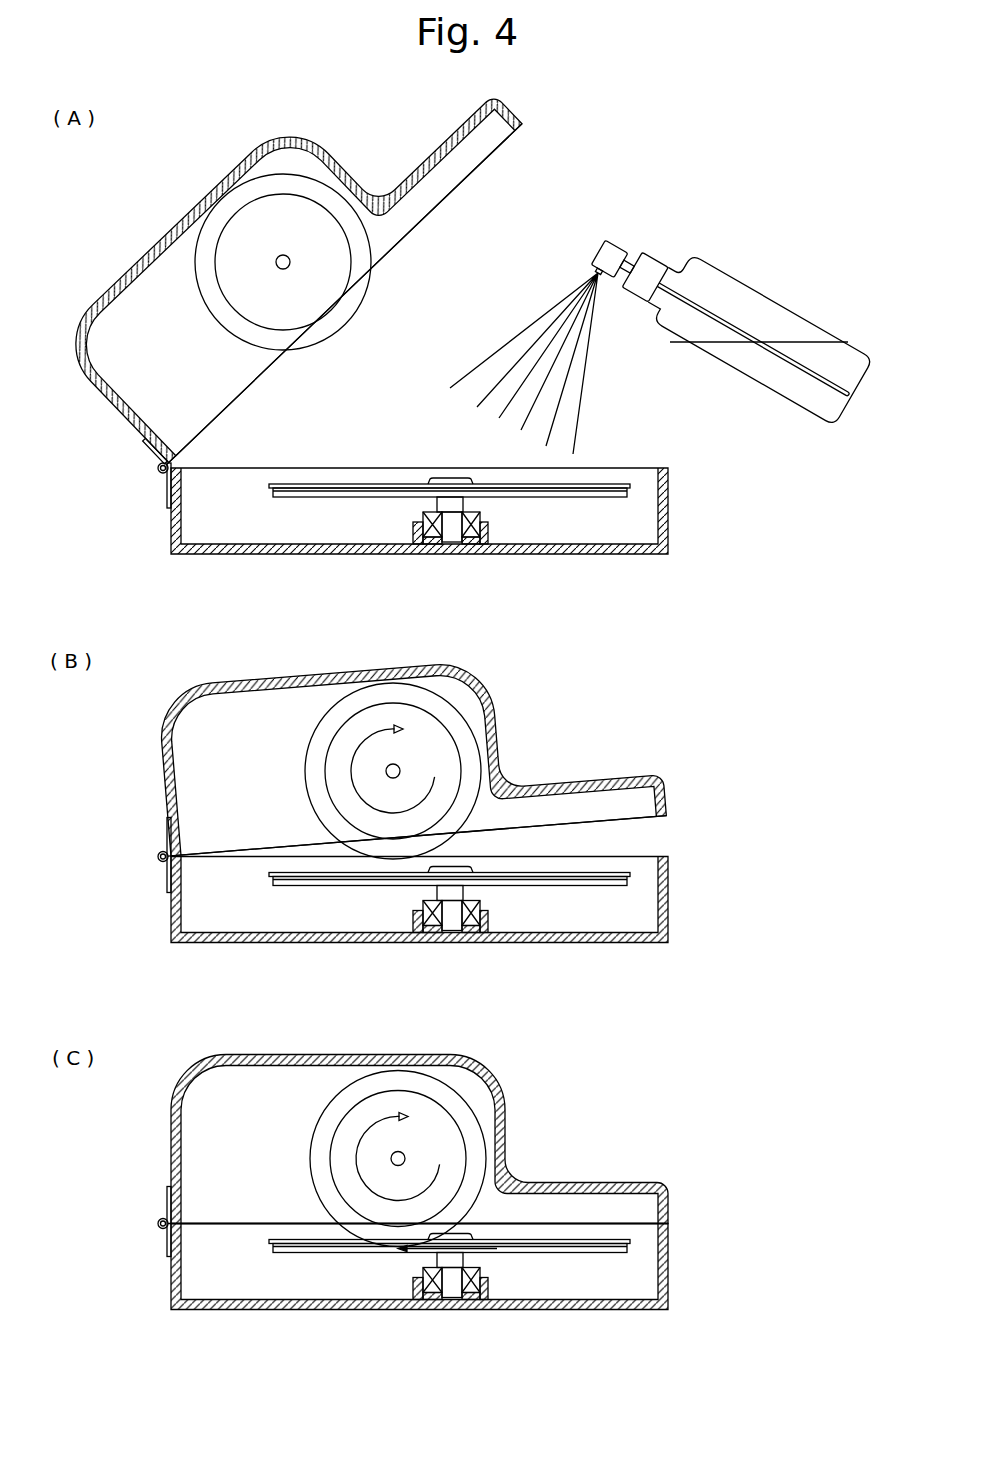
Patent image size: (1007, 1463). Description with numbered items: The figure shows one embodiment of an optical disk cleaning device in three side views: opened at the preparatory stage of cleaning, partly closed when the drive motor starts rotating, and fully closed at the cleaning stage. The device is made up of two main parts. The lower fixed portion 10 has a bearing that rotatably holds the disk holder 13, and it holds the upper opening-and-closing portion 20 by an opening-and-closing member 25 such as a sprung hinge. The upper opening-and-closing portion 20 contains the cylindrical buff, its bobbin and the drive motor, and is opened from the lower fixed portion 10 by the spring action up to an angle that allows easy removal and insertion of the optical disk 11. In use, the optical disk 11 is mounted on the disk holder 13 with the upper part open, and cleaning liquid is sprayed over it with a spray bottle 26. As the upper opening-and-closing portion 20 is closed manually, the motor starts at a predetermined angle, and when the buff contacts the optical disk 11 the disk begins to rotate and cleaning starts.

The lower fixed portion 10 is at (673, 1239).
The optical disk 11 is at (290, 1241).
The disk holder 13 is at (323, 1251).
The upper opening-and-closing portion 20 is at (497, 100).
The opening-and-closing member 25 is at (159, 1228).
The spray bottle 26 is at (730, 280).